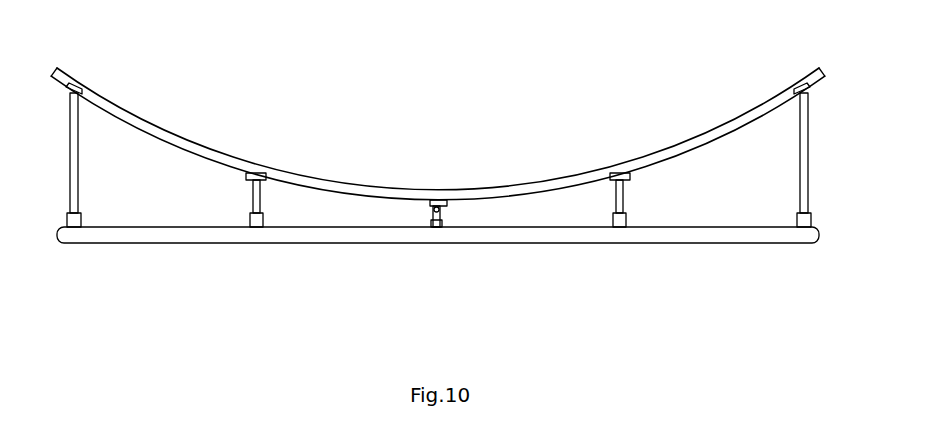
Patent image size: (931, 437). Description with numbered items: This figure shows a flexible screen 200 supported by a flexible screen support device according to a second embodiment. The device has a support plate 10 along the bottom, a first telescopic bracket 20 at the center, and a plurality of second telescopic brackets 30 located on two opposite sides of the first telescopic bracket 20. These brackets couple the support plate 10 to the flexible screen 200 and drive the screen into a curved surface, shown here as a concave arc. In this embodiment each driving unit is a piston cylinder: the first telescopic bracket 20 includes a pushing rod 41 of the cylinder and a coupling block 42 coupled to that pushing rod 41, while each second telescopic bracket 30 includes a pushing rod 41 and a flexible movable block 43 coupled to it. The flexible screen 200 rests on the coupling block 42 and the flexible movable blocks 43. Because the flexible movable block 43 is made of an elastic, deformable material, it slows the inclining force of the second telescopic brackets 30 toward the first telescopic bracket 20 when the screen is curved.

The support plate 10 is at (515, 233).
The first telescopic bracket 20 is at (446, 225).
The second telescopic bracket 30 is at (266, 227).
The pushing rod 41 is at (252, 208).
The coupling block 42 is at (442, 202).
The flexible movable block 43 is at (253, 172).
The flexible screen 200 is at (318, 178).